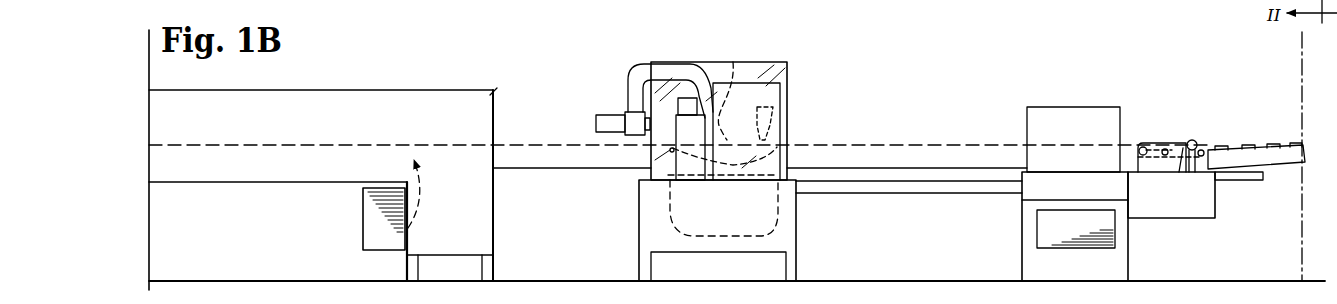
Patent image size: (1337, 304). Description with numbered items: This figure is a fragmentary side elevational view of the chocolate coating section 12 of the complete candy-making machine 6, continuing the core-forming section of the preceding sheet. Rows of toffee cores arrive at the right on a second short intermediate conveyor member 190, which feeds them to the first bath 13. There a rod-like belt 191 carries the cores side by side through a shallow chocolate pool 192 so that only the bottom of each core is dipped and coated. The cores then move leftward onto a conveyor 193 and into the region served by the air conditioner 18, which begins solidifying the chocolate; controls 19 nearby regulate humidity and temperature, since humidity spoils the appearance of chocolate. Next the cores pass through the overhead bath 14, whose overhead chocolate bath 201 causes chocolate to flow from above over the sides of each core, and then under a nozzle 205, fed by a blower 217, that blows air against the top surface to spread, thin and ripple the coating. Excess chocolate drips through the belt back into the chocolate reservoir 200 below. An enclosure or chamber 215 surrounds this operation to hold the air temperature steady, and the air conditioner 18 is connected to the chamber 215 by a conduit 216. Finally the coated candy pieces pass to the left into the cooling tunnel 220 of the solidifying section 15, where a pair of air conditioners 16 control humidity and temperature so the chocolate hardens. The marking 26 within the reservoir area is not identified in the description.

The apparatus or machine 6 is at (515, 42).
The chocolate coating section 12 is at (914, 80).
The bath 13 is at (1148, 143).
The overhead bath 14 is at (790, 73).
The chocolate solidifying section 15 is at (388, 90).
The air conditioners 16 is at (362, 219).
The air conditioner 18 is at (1043, 226).
The controls 19 is at (1030, 128).
The container 26 is at (721, 242).
The second short intermediate conveyor member 190 is at (1238, 151).
The rod-like belt 191 is at (1181, 142).
The chocolate pool 192 is at (1164, 149).
The conveyor 193 is at (1067, 223).
The chocolate reservoir 200 is at (670, 202).
The overhead chocolate bath 201 is at (780, 120).
The nozzle 205 is at (733, 62).
The enclosure or chamber 215 is at (672, 61).
The conduit 216 is at (897, 193).
The blower 217 is at (630, 112).
The cooling tunnel 220 is at (480, 103).